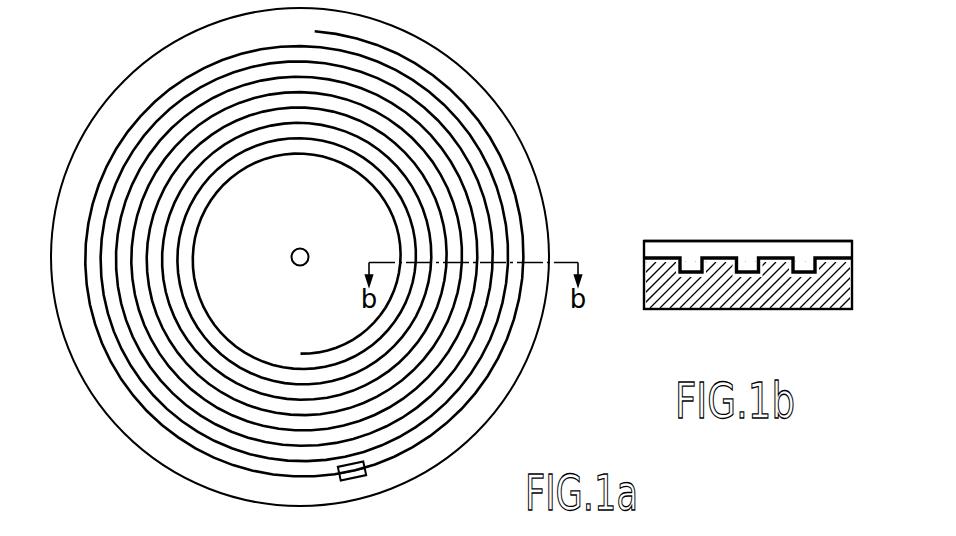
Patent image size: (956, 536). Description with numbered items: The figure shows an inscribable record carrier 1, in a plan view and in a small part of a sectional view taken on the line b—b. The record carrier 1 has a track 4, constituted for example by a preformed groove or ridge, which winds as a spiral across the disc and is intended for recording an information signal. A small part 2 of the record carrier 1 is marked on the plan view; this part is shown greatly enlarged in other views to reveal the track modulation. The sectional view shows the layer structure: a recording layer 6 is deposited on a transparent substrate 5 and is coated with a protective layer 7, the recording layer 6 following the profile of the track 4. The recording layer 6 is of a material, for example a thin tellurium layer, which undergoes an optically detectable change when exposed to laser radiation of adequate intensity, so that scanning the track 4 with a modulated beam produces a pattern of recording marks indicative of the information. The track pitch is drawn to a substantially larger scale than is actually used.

In FIG. 1a, the record carrier 1 is at (486, 82).
In FIG. 1b, the record carrier 1 is at (645, 205).
In FIG. 1a, the part of the record carrier 2 is at (354, 482).
In FIG. 1a, the track 4 is at (140, 408).
In FIG. 1b, the track 4 is at (704, 278).
In FIG. 1b, the transparent substrate 5 is at (671, 296).
In FIG. 1b, the recording layer 6 is at (818, 257).
In FIG. 1b, the protective layer 7 is at (744, 252).